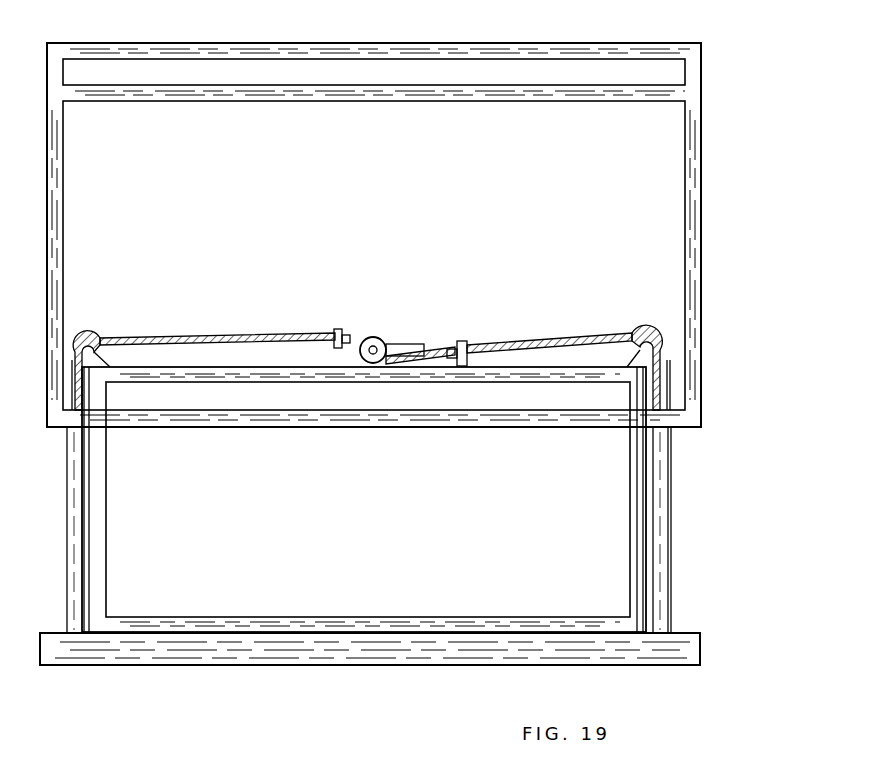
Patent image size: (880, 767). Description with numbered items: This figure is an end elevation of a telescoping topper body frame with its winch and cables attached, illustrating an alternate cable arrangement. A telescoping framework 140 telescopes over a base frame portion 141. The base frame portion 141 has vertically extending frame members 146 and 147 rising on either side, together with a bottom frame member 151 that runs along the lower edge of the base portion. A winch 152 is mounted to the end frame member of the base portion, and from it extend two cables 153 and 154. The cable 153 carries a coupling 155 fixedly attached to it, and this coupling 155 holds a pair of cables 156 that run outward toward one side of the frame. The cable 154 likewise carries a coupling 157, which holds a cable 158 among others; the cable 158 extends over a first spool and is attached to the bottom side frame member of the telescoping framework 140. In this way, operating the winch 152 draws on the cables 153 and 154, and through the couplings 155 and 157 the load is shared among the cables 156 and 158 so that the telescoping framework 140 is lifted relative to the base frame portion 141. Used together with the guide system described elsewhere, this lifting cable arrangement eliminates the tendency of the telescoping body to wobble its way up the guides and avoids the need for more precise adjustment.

The telescoping framework 140 is at (703, 81).
The base frame portion 141 is at (243, 608).
The vertically extending frame member 146 is at (635, 593).
The vertically extending frame member 147 is at (93, 593).
The bottom frame member 151 is at (392, 627).
The winch 152 is at (432, 345).
The cable 153 is at (366, 336).
The cable 154 is at (440, 342).
The coupling 155 is at (335, 330).
The cables 156 is at (182, 338).
The coupling 157 is at (468, 346).
The cable 158 is at (603, 315).